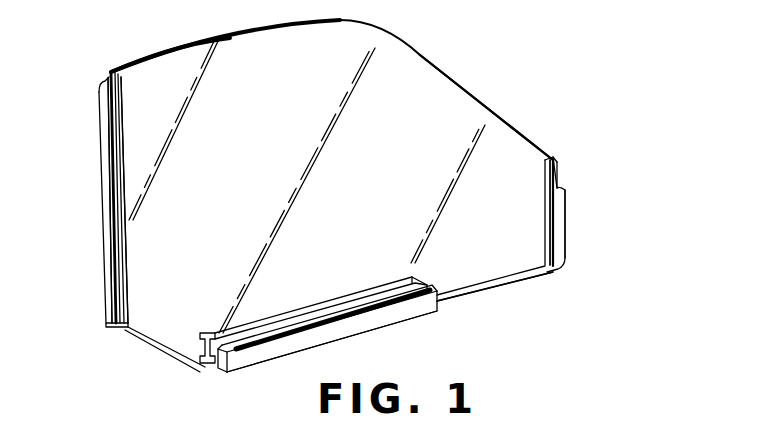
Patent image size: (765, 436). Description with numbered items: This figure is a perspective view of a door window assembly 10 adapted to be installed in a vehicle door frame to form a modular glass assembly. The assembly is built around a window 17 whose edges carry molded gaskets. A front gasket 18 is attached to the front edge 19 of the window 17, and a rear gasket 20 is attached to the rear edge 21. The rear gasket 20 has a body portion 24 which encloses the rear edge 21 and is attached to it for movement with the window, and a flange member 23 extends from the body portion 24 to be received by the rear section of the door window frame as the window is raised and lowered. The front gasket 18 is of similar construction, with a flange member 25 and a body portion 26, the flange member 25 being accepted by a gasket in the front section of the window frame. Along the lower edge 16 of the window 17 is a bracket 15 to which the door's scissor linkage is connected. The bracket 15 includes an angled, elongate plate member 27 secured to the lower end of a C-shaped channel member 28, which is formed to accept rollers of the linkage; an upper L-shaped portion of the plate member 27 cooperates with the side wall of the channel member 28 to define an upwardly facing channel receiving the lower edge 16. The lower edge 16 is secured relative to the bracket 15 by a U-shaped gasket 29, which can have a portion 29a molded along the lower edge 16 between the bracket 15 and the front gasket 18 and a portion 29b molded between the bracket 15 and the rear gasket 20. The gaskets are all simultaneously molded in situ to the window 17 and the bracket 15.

The window assembly 10 is at (500, 76).
The bracket 15 is at (364, 331).
The lower edge 16 is at (522, 281).
The window 17 is at (424, 58).
The front gasket 18 is at (570, 199).
The front edge 19 is at (556, 159).
The rear gasket 20 is at (100, 147).
The rear edge 21 is at (110, 70).
The flange member 23 is at (109, 200).
The body portion 24 is at (128, 224).
The flange member 25 is at (565, 241).
The body portion 26 is at (554, 225).
The angled, elongate plate member 27 is at (284, 350).
The C-shaped channel member 28 is at (217, 332).
The U-shaped gasket 29 is at (243, 347).
The portion of gasket 29a is at (478, 297).
The portion of gasket 29b is at (156, 345).